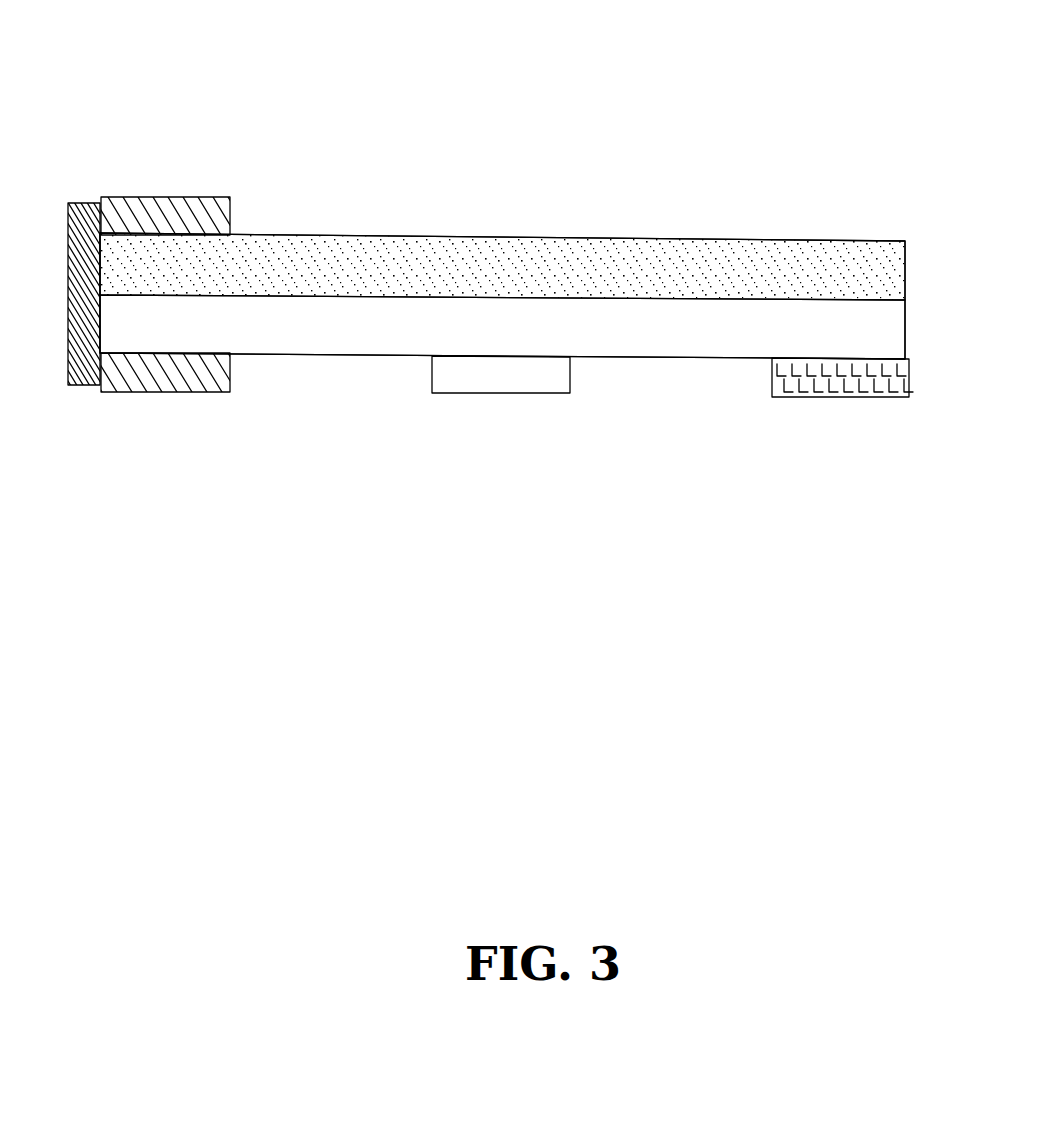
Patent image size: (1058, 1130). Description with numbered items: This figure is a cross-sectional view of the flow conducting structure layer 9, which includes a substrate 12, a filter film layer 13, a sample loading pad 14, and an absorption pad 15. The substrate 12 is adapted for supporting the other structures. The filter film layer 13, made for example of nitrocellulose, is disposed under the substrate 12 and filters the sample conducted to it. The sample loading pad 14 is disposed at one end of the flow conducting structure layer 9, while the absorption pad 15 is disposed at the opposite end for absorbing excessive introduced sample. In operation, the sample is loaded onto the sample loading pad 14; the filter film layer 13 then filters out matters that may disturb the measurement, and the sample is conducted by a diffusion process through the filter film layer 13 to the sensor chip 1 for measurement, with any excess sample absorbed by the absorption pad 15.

The sensor chip 1 is at (498, 382).
The flow conducting structure layer 9 is at (405, 175).
The substrate 12 is at (619, 288).
The filter film layer 13 is at (342, 327).
The sample loading pad 14 is at (161, 197).
The absorption pad 15 is at (840, 387).